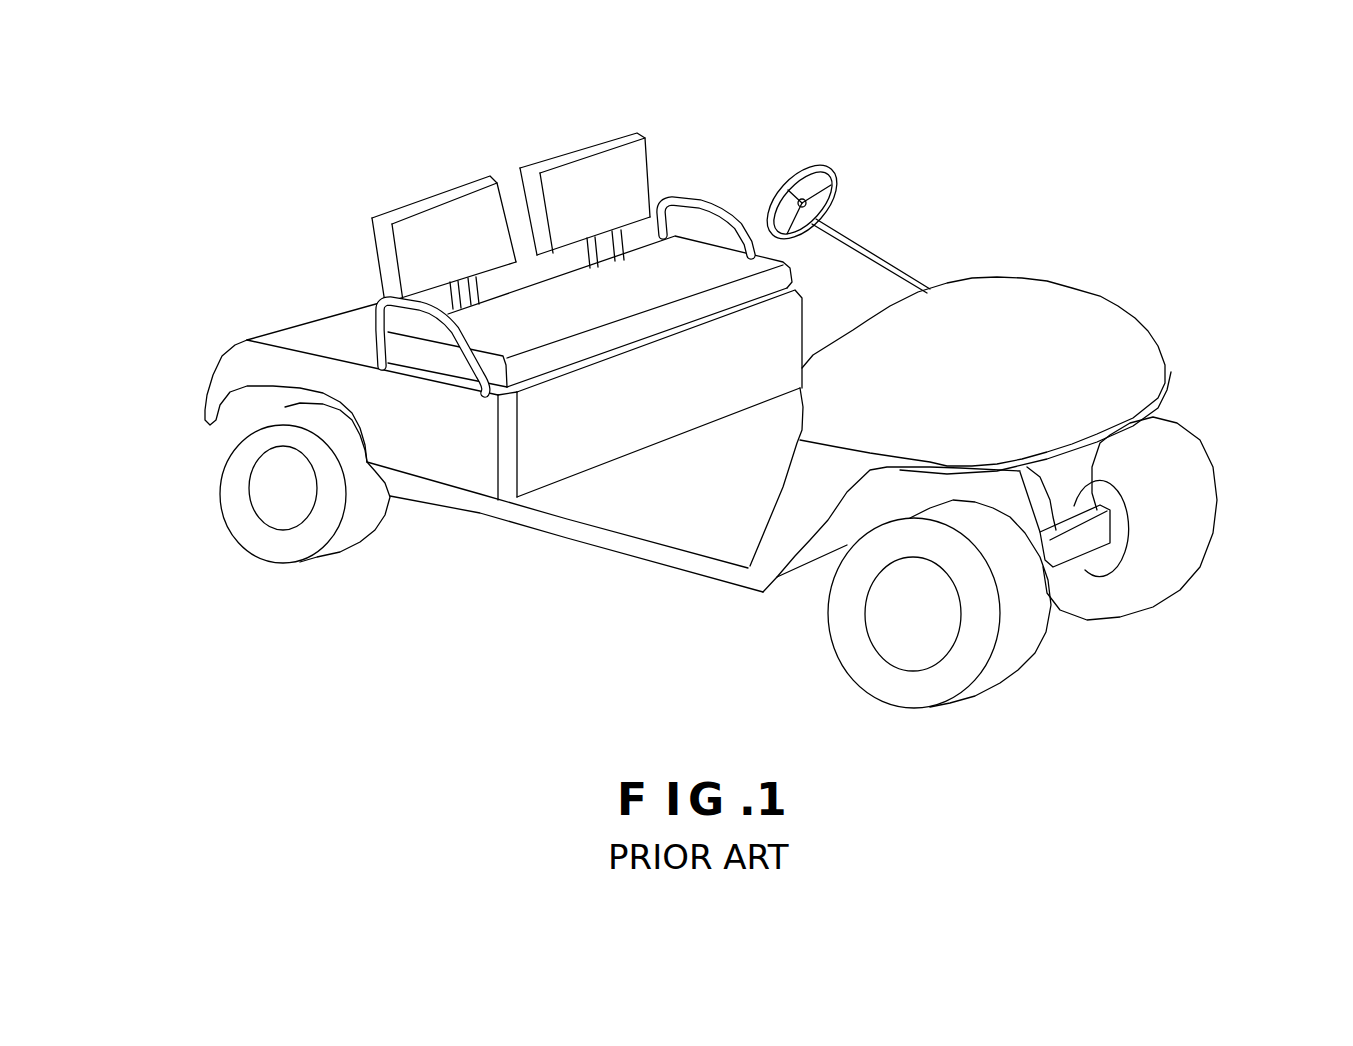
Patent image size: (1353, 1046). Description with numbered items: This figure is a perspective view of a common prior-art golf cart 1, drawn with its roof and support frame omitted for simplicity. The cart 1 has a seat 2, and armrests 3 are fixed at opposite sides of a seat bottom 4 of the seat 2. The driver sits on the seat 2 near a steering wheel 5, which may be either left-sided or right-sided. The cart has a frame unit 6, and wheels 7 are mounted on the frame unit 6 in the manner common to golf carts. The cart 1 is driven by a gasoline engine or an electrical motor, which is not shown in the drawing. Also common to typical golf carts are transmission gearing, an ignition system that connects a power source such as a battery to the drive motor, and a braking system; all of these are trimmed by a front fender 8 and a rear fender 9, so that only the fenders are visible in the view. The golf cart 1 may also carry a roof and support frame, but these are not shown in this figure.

The golf cart 1 is at (720, 381).
The seat 2 is at (582, 254).
The armrests 3 is at (499, 242).
The seat bottom 4 is at (590, 311).
The steering wheel 5 is at (842, 173).
The frame unit 6 is at (618, 458).
The wheels 7 is at (757, 549).
The front fender 8 is at (1003, 353).
The rear fender 9 is at (256, 381).